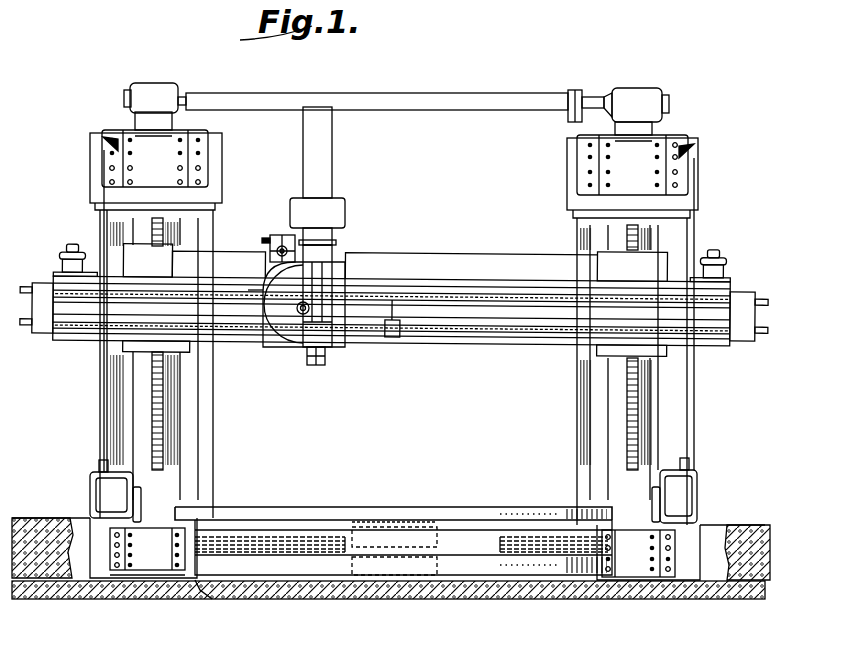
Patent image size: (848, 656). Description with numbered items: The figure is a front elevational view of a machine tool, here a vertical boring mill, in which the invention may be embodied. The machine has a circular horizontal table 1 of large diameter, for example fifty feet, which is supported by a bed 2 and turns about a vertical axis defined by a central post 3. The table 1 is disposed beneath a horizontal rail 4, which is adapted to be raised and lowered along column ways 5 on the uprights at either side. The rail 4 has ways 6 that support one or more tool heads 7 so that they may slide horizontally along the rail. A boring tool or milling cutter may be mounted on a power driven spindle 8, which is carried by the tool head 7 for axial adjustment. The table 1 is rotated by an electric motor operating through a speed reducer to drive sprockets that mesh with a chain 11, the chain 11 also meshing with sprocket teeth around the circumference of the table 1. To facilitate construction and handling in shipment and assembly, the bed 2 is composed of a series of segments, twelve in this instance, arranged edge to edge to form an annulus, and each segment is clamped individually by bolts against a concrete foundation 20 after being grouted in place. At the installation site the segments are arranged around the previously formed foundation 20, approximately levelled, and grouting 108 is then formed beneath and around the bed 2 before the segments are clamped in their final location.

The circular horizontal table 1 is at (483, 515).
The bed 2 is at (447, 567).
The central post 3 is at (437, 530).
The horizontal rail 4 is at (429, 262).
The column ways 5 is at (167, 479).
The ways 6 is at (230, 282).
The tool head 7 is at (338, 270).
The power driven spindle 8 is at (326, 358).
The chain 11 is at (292, 535).
The concrete foundation 20 is at (112, 598).
The grouting 108 is at (200, 590).